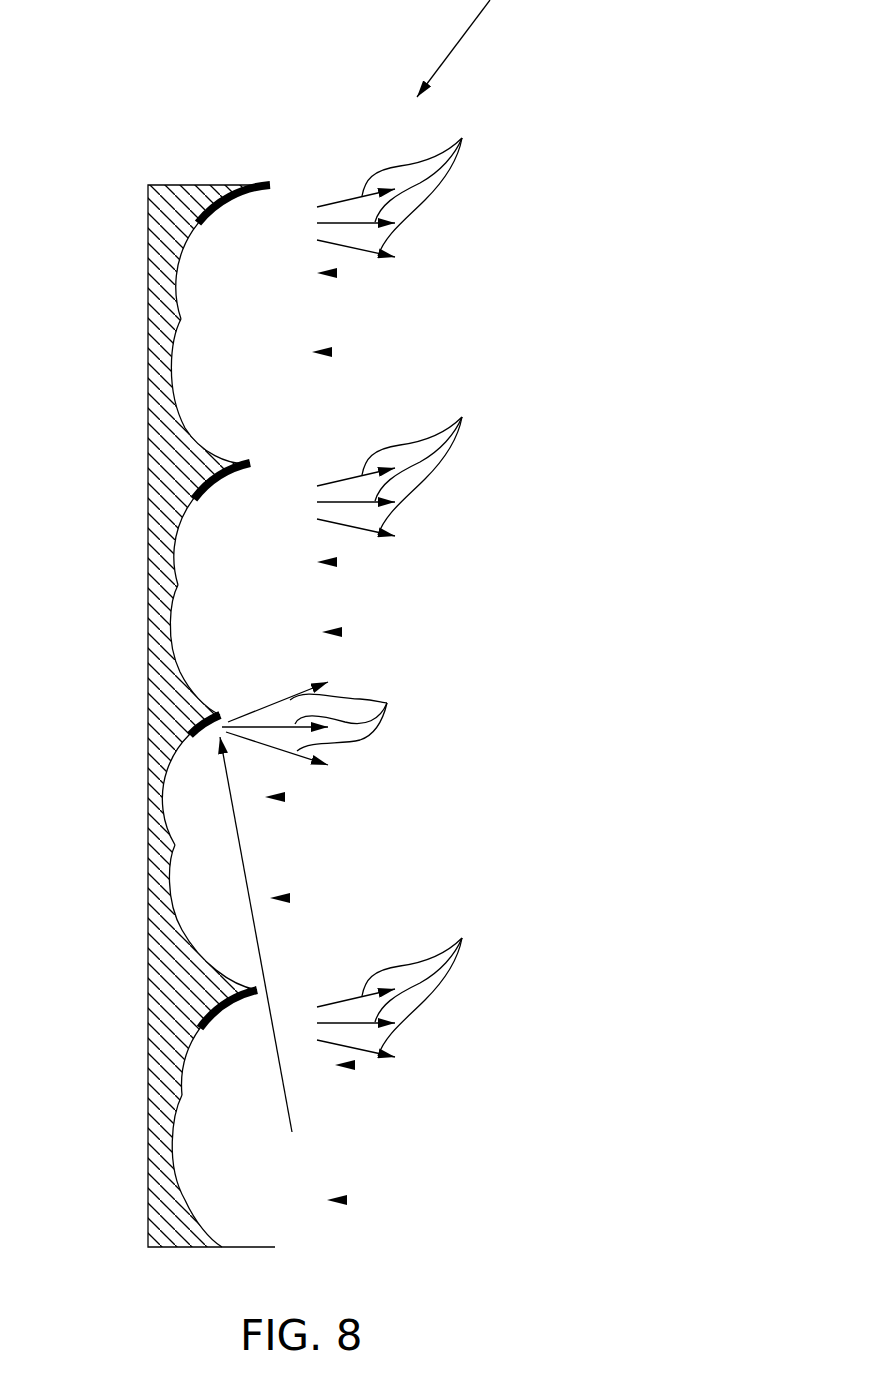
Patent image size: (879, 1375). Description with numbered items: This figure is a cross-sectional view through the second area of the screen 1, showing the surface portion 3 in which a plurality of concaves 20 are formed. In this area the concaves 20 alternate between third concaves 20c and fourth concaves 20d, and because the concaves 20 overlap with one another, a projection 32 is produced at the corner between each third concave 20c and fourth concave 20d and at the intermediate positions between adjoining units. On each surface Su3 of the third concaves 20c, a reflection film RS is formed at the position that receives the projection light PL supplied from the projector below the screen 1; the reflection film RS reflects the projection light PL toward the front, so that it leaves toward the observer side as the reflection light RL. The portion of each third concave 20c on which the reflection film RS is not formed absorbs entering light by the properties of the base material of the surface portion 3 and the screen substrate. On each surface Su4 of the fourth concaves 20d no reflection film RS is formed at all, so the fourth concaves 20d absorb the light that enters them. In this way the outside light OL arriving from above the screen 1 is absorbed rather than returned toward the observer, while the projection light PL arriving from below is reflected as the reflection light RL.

The screen 1 is at (253, 135).
The surface portion 3 is at (198, 185).
The projection 32 is at (250, 463).
The reflection film RS is at (215, 210).
The surface of the third concave Su3 is at (177, 293).
The surface of the fourth concave Su4 is at (177, 400).
The reflection light RL is at (349, 583).
The outside light OL is at (463, 33).
The projection light PL is at (290, 1095).
The concave 20 is at (337, 274).
The third concave 20c is at (337, 563).
The fourth concave 20d is at (342, 633).